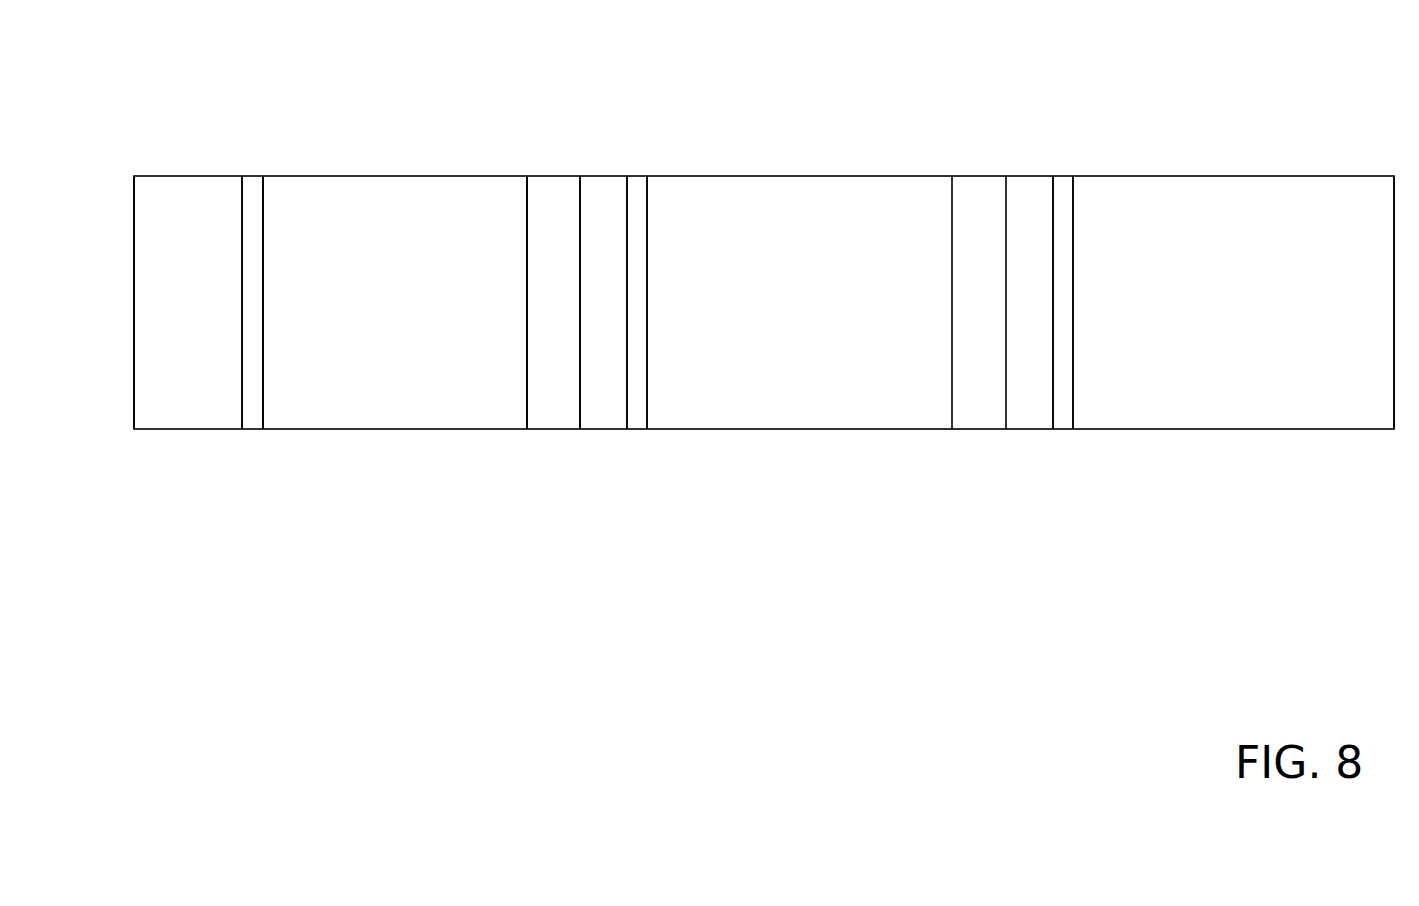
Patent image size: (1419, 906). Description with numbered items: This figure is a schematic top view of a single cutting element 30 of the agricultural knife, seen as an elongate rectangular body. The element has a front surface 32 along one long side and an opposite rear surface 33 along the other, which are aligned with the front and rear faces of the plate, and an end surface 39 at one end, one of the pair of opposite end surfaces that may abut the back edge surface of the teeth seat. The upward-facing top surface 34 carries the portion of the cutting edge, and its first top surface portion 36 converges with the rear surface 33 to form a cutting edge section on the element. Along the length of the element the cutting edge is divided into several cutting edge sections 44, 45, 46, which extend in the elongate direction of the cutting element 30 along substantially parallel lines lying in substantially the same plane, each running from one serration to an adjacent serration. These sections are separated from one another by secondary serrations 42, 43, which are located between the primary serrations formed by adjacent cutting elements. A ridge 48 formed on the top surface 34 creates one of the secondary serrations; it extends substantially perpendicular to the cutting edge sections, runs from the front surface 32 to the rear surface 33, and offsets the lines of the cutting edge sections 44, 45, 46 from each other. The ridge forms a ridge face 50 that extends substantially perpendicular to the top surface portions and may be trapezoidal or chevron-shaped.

The cutting element 30 is at (1250, 93).
The end surface 39 is at (132, 212).
The rear surface 33 is at (178, 175).
The cutting edge section 46 is at (372, 175).
The secondary serration 43 is at (649, 162).
The cutting edge section 45 is at (735, 177).
The ridge 48 is at (1043, 150).
The secondary serration 42 is at (1070, 160).
The cutting edge section 44 is at (1130, 176).
The ridge face 50 is at (193, 392).
The front surface 32 is at (358, 433).
The top surface 34 is at (475, 403).
The first top surface portion 36 is at (507, 412).